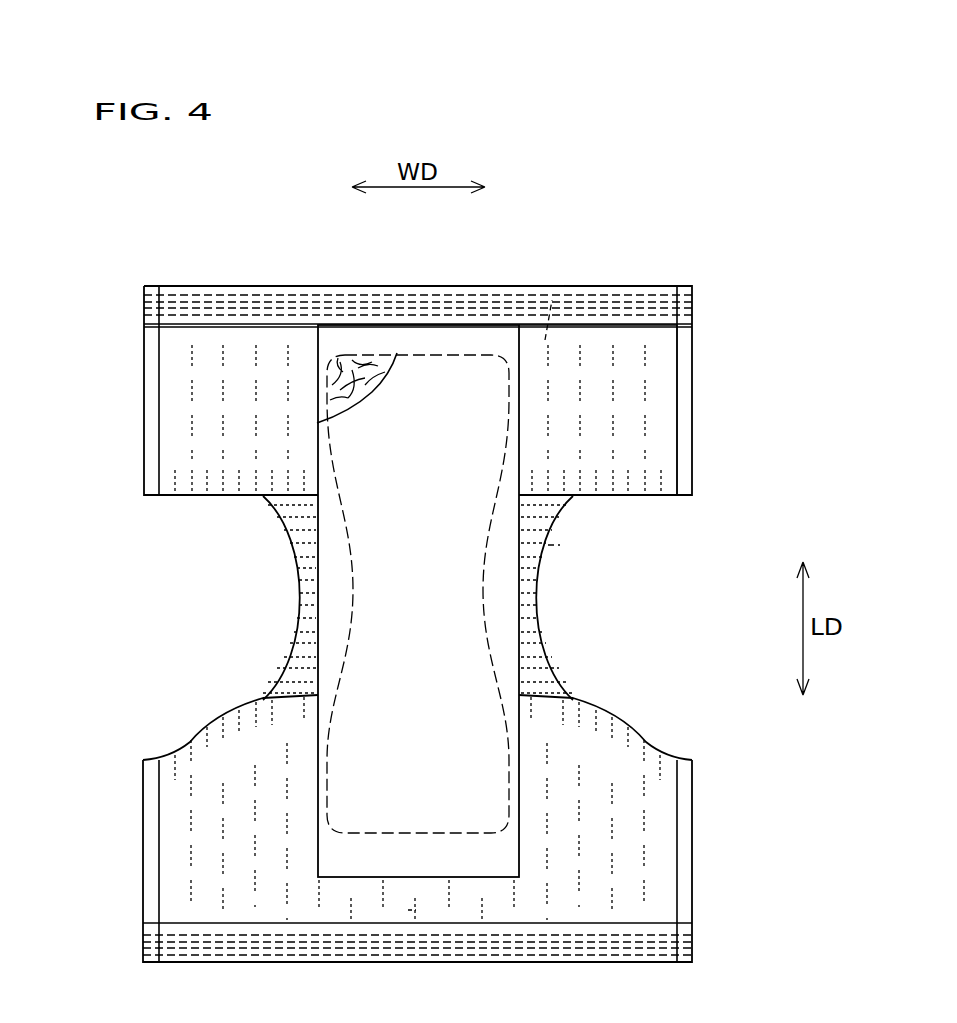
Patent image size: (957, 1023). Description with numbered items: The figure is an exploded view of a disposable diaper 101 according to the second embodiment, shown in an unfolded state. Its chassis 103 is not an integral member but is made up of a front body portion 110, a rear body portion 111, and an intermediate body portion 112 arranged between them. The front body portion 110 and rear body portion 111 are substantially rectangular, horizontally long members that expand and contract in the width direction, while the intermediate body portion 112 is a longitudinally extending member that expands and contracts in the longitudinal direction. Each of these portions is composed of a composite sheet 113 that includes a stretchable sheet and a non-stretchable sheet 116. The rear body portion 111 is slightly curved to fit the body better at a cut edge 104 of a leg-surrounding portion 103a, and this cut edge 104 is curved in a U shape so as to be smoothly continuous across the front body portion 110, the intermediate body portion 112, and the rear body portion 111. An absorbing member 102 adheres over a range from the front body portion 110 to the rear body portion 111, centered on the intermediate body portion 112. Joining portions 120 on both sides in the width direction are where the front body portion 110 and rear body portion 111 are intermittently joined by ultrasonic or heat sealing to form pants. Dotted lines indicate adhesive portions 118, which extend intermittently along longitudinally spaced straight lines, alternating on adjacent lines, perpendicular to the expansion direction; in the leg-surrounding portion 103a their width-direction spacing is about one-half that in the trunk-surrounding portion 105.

The disposable diaper 101 is at (638, 192).
The absorbing member 102 is at (437, 372).
The chassis 103 is at (137, 388).
The leg-surrounding portion 103a is at (226, 593).
The cut edge 104 is at (650, 495).
The trunk-surrounding portion 105 is at (655, 402).
The front body portion 110 is at (645, 358).
The rear body portion 111 is at (655, 815).
The intermediate body portion 112 is at (537, 590).
The composite sheet 113 is at (209, 337).
The non-stretchable sheet 116 is at (648, 437).
The adhesive portions 118 is at (548, 340).
The joining portions 120 is at (150, 465).